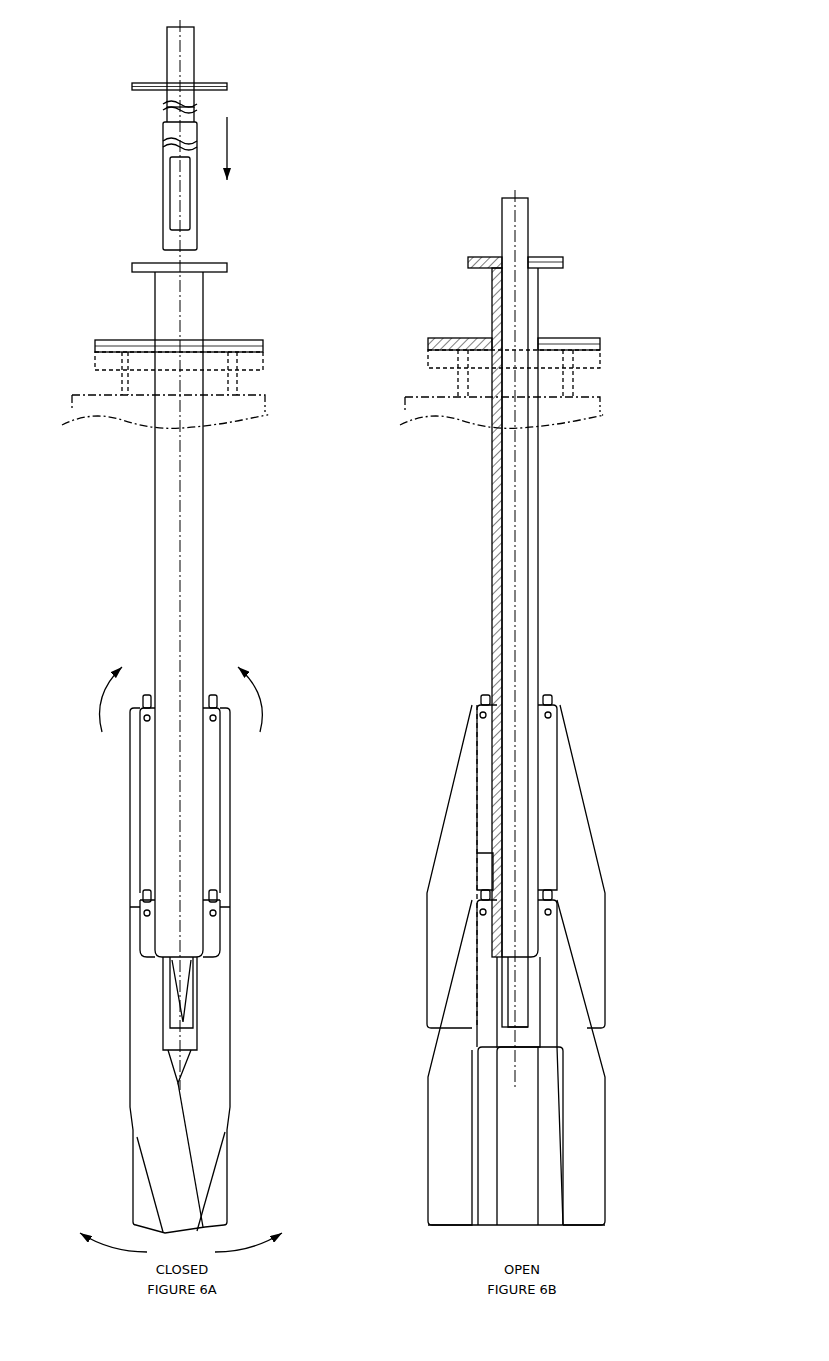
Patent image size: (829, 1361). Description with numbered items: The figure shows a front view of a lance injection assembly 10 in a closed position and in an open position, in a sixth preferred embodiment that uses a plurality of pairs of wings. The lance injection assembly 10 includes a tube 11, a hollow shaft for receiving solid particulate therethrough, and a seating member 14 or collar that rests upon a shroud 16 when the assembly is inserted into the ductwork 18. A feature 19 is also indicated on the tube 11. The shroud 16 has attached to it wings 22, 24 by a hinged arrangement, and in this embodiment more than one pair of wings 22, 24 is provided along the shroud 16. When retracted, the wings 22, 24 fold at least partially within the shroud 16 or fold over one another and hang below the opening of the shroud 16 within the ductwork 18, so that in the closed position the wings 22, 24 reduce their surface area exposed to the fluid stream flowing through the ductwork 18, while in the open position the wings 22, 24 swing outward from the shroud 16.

In FIG. 6B, the lance injection assembly 10 is at (655, 170).
In FIG. 6A, the tube 11 is at (167, 58).
In FIG. 6A, the seating member 14 is at (230, 82).
In FIG. 6A, the shroud 16 is at (205, 303).
In FIG. 6B, the shroud 16 is at (490, 472).
In FIG. 6A, the ductwork 18 is at (263, 358).
In FIG. 6A, the slot 19 is at (200, 218).
In FIG. 6A, the wing 22 is at (130, 807).
In FIG. 6B, the wing 22 is at (445, 798).
In FIG. 6A, the wing 24 is at (230, 807).
In FIG. 6B, the wing 24 is at (577, 770).